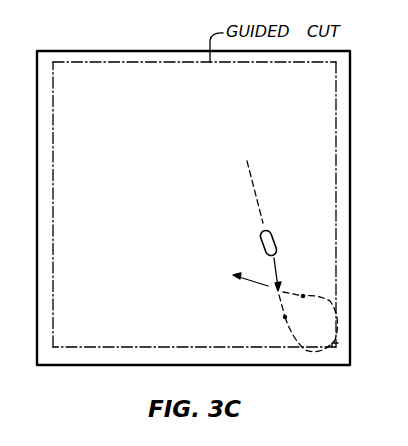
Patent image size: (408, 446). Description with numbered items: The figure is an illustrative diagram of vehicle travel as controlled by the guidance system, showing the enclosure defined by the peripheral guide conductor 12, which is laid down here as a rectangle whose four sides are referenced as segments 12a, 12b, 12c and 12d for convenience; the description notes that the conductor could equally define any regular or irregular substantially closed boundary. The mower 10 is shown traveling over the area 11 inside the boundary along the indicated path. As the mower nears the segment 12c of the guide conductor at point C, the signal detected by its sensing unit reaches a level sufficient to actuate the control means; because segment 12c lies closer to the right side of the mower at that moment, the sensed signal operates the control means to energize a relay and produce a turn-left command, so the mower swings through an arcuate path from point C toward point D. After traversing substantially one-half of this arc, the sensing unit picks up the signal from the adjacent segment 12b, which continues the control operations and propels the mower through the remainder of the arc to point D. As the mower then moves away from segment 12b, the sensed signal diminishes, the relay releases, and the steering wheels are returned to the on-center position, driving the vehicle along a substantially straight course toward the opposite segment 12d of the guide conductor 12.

The cutter / cutting tool 10 is at (260, 238).
The sheet material 11 is at (190, 308).
The guide conductor 12 is at (68, 50).
The side of guide conductor 12a is at (132, 52).
The conductor segment 12b is at (350, 189).
The segment of peripheral guide conductor 12c is at (135, 364).
The guide conductor segment 12d is at (40, 228).
The point C is at (285, 317).
The point D is at (303, 296).